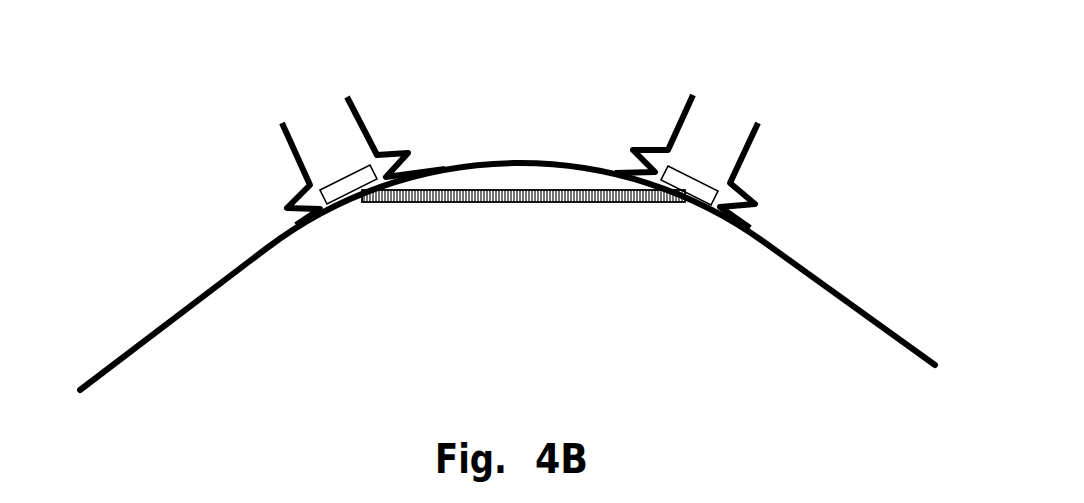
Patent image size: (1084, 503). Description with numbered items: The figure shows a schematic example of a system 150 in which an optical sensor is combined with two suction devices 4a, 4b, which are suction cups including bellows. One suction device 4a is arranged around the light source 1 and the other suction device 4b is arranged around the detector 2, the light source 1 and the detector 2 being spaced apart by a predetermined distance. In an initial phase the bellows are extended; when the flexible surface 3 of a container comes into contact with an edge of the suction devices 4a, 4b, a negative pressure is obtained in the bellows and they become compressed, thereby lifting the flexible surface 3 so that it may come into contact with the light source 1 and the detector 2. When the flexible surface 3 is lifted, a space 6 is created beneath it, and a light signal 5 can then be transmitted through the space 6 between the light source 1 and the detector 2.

The system 150 is at (213, 89).
The light source 1 is at (324, 189).
The detector 2 is at (713, 186).
The flexible surface 3 is at (146, 326).
The suction device 4a is at (393, 126).
The suction device 4b is at (654, 118).
The light signal 5 is at (464, 219).
The space 6 is at (592, 291).